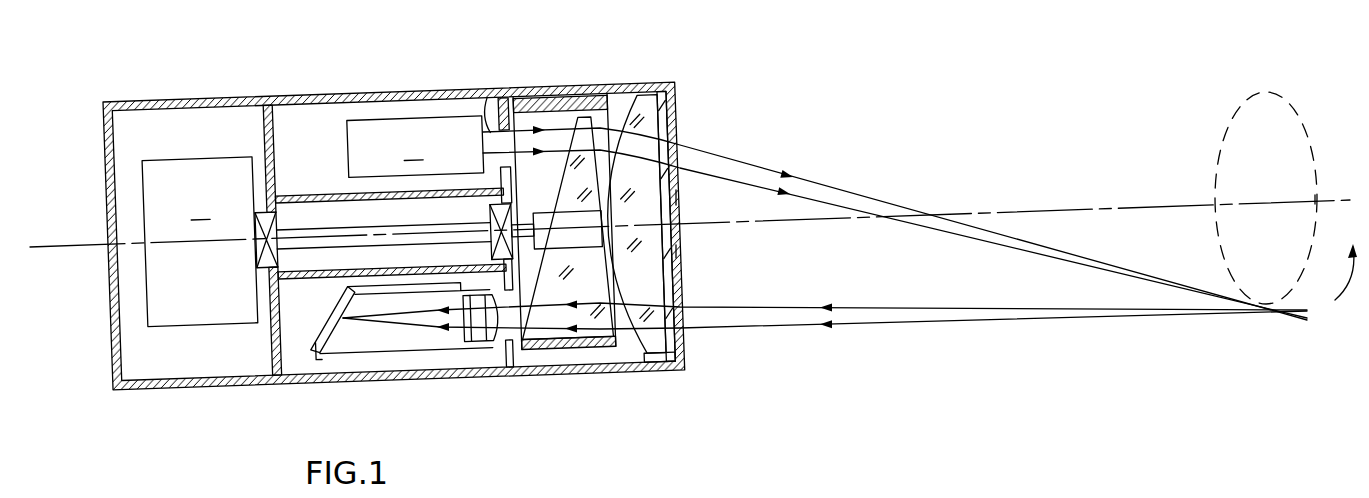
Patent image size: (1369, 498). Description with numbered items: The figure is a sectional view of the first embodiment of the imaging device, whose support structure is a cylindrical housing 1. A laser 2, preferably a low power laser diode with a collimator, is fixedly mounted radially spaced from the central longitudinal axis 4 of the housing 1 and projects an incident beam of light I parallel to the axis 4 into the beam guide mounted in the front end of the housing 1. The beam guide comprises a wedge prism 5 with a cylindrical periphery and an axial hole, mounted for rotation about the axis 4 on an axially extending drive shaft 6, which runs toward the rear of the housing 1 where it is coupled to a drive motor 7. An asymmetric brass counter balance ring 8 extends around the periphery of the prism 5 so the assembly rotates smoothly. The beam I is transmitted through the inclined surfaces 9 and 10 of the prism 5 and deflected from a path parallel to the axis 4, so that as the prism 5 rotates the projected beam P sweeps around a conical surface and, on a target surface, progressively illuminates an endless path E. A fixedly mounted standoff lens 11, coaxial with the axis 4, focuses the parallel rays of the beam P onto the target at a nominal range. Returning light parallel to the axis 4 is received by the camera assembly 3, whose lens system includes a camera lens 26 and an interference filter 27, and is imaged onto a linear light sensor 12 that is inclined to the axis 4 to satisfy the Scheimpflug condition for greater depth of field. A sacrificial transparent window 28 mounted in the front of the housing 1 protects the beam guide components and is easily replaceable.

The cylindrical housing 1 is at (282, 384).
The laser 2 is at (415, 147).
The camera assembly 3 is at (411, 352).
The central longitudinal axis 4 is at (97, 249).
The wedge prism 5 is at (598, 95).
The drive shaft 6 is at (330, 230).
The drive motor 7 is at (200, 242).
The counter balance ring 8 is at (548, 88).
The inclined surface 9 is at (560, 176).
The inclined surface 10 is at (678, 198).
The standoff lens 11 is at (647, 97).
The linear light sensor 12 is at (321, 332).
The camera lens 26 is at (490, 349).
The interference filter 27 is at (480, 348).
The sacrificial transparent window 28 is at (680, 251).
The incident beam of light I is at (482, 87).
The projected beam P is at (855, 195).
The endless path E is at (1220, 138).